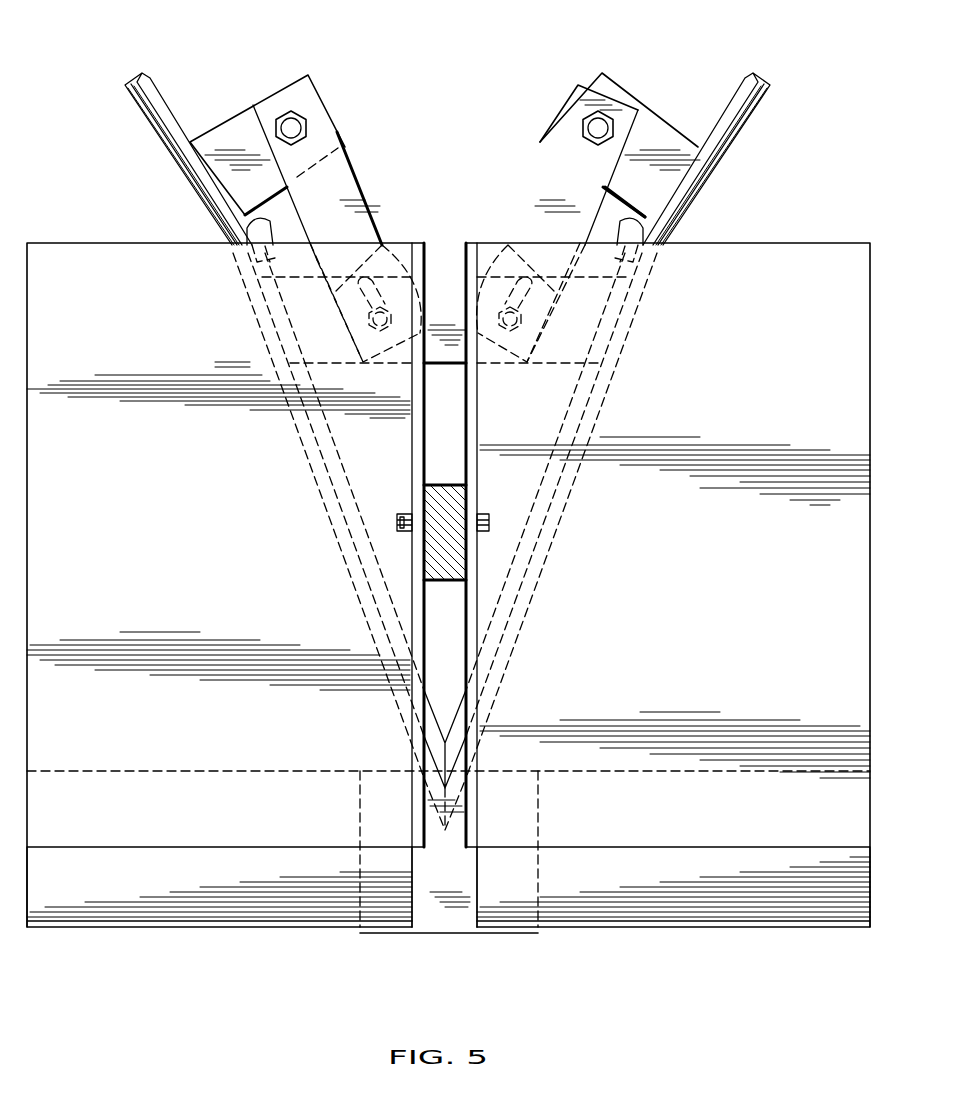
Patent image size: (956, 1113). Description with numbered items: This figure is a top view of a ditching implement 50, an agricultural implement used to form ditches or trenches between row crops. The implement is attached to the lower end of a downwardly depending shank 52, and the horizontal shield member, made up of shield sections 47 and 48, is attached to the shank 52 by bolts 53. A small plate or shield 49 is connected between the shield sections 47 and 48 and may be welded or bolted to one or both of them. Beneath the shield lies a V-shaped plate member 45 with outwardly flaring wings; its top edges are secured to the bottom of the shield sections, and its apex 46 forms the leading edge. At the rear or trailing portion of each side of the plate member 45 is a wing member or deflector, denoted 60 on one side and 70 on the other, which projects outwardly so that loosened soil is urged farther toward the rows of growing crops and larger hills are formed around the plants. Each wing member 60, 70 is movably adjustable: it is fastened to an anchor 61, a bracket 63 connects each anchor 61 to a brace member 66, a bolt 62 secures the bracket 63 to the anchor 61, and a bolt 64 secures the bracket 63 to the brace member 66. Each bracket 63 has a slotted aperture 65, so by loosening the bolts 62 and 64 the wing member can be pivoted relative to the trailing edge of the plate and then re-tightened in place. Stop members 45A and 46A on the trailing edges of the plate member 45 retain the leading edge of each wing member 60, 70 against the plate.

The V-shaped plate member 45 is at (505, 665).
The stop member 45A is at (262, 227).
The apex 46 is at (445, 832).
The stop member 46A is at (628, 227).
The shield section 47 is at (285, 905).
The shield section 48 is at (663, 910).
The small plate or shield 49 is at (453, 925).
The ditching implement 50 is at (178, 952).
The shank 52 is at (437, 582).
The bolt 53 is at (488, 522).
The wing member or deflector 60 is at (163, 130).
The anchor 61 is at (218, 140).
The bolt 62 is at (291, 110).
The bracket 63 is at (343, 172).
The bolt 64 is at (419, 240).
The slotted aperture 65 is at (408, 262).
The brace member 66 is at (443, 292).
The wing member or deflector 70 is at (722, 142).